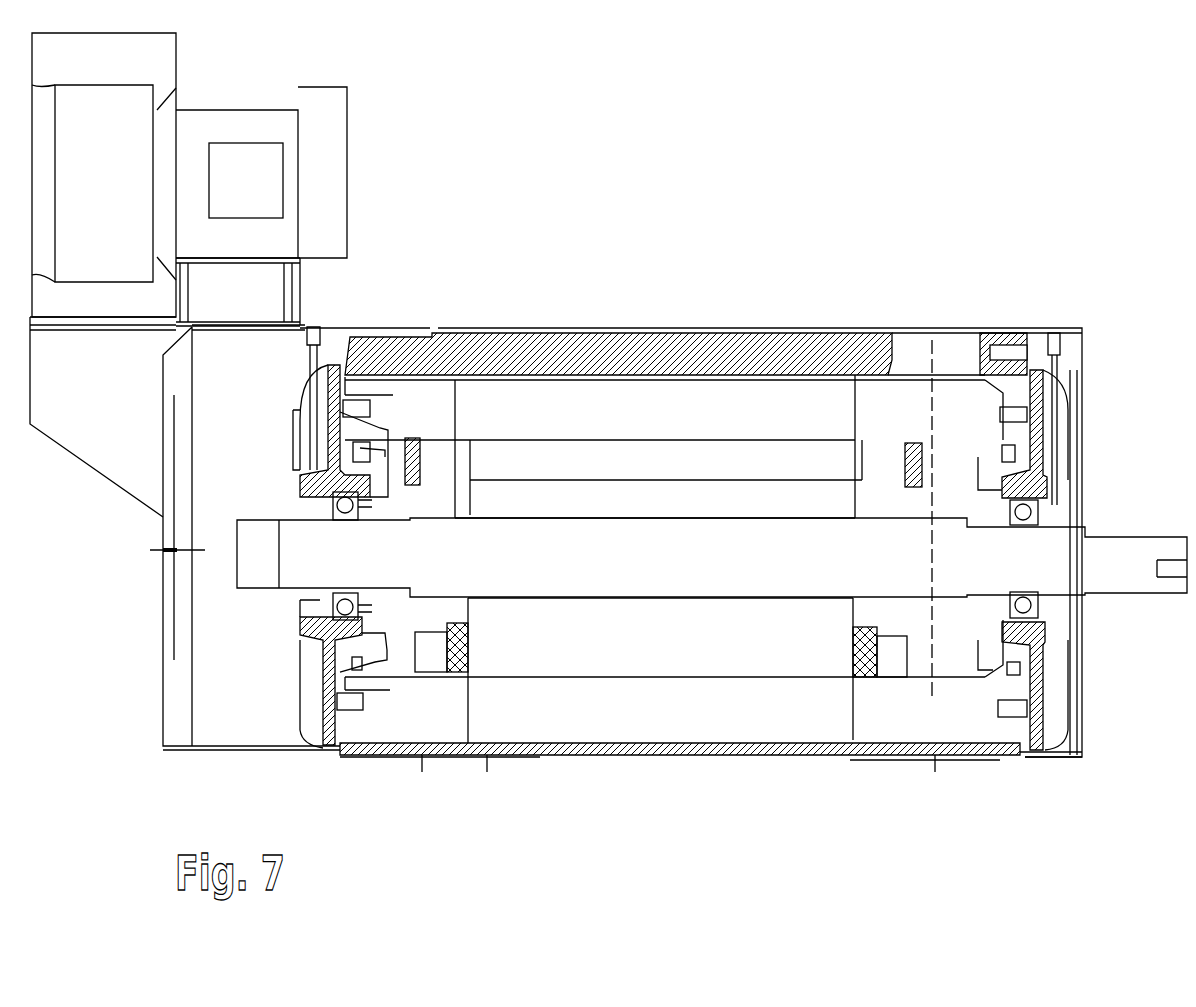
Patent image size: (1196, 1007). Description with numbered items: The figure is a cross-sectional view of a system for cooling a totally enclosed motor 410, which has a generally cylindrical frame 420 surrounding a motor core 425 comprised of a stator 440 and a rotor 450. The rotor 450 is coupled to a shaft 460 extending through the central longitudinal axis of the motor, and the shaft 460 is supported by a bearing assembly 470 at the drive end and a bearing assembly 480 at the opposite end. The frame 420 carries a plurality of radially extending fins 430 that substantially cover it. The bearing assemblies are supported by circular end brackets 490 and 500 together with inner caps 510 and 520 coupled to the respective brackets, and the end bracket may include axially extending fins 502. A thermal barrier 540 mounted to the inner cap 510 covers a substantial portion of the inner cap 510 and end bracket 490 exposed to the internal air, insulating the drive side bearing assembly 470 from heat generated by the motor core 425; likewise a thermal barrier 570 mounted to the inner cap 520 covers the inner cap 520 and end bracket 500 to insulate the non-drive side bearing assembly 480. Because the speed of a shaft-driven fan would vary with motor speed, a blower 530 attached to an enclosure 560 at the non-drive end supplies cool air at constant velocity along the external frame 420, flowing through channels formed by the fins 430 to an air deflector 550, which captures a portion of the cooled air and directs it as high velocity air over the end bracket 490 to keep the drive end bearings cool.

The totally enclosed motor 410 is at (850, 182).
The frame 420 is at (835, 752).
The motor core 425 is at (742, 402).
The fins 430 is at (608, 338).
The stator 440 is at (733, 703).
The rotor 450 is at (648, 647).
The shaft 460 is at (522, 568).
The bearing assembly 470 is at (1060, 395).
The bearing assembly 480 is at (350, 492).
The end bracket 490 is at (1080, 457).
The end bracket 500 is at (352, 752).
The axially extending fins 502 is at (1040, 750).
The inner cap 510 is at (1028, 385).
The inner cap 520 is at (375, 490).
The blower 530 is at (268, 54).
The thermal barrier 540 is at (985, 672).
The air deflector 550 is at (1067, 757).
The enclosure 560 is at (205, 752).
The thermal barrier 570 is at (408, 762).